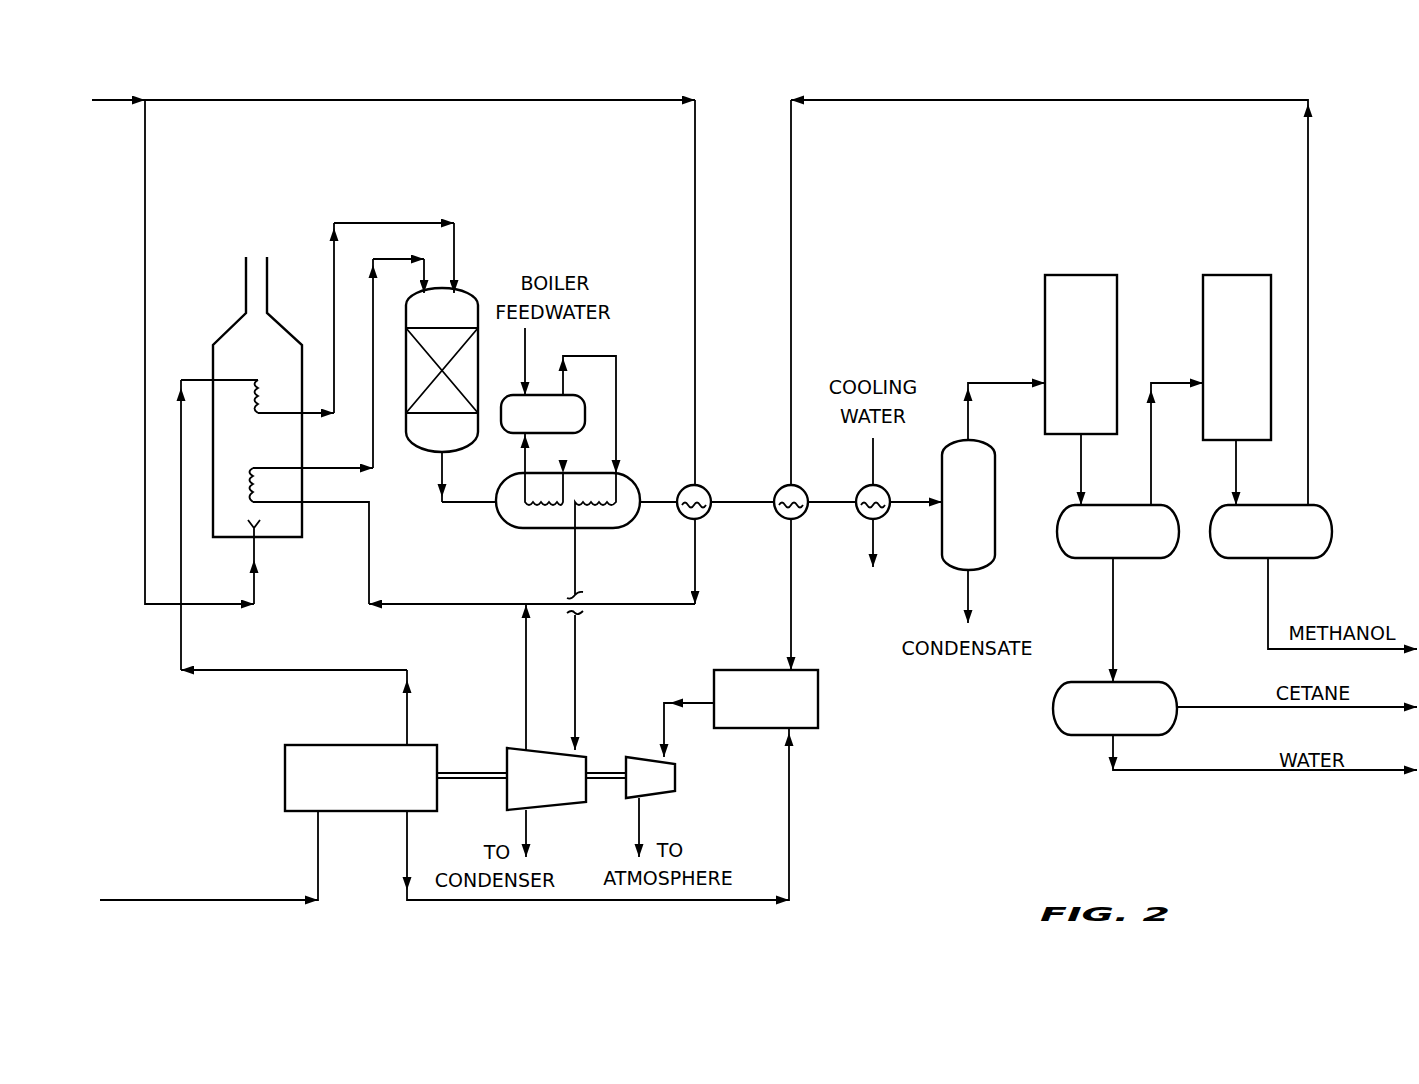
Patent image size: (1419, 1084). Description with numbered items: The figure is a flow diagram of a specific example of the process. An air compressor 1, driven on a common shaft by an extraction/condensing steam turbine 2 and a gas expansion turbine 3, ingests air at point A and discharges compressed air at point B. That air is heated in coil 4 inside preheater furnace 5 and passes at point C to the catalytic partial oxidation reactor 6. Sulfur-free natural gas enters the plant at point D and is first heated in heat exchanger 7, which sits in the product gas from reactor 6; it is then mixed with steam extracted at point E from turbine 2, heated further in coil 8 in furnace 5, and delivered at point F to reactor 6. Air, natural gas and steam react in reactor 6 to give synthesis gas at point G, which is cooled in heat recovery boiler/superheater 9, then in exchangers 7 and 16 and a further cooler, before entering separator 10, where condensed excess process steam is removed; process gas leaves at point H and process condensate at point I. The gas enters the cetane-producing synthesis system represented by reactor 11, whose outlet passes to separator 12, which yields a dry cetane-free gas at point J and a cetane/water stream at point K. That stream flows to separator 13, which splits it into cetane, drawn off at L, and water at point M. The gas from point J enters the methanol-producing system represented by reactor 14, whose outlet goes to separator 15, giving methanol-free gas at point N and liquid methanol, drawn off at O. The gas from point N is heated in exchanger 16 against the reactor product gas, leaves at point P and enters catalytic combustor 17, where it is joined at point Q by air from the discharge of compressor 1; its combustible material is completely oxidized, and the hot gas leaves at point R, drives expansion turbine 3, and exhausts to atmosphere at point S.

The air compressor 1 is at (356, 788).
The extraction/condensing steam turbine 2 is at (538, 789).
The gas expansion turbine 3 is at (641, 789).
The coil 4 is at (257, 397).
The preheater furnace 5 is at (257, 397).
The catalytic partial oxidation reactor 6 is at (436, 324).
The heat exchanger 7 is at (704, 491).
The coil 8 is at (300, 536).
The heat recovery boiler/superheater 9 is at (624, 474).
The separator 10 is at (1000, 496).
The reactor 11 is at (1069, 367).
The separator 12 is at (1105, 544).
The separator 13 is at (1115, 708).
The reactor 14 is at (1226, 369).
The separator 15 is at (1257, 544).
The exchanger 16 is at (802, 491).
The catalytic combustor 17 is at (754, 710).
The point A is at (226, 898).
The point B is at (308, 667).
The point C is at (394, 221).
The point D is at (470, 99).
The point E is at (523, 714).
The point F is at (399, 259).
The point G is at (437, 468).
The point H is at (1000, 382).
The point I is at (970, 605).
The point J is at (1170, 383).
The point K is at (1120, 625).
The stream L is at (1204, 703).
The point M is at (1205, 770).
The point N is at (1308, 382).
The stream O is at (1269, 609).
The point P is at (793, 648).
The point Q is at (789, 793).
The point R is at (688, 698).
The point S is at (641, 832).